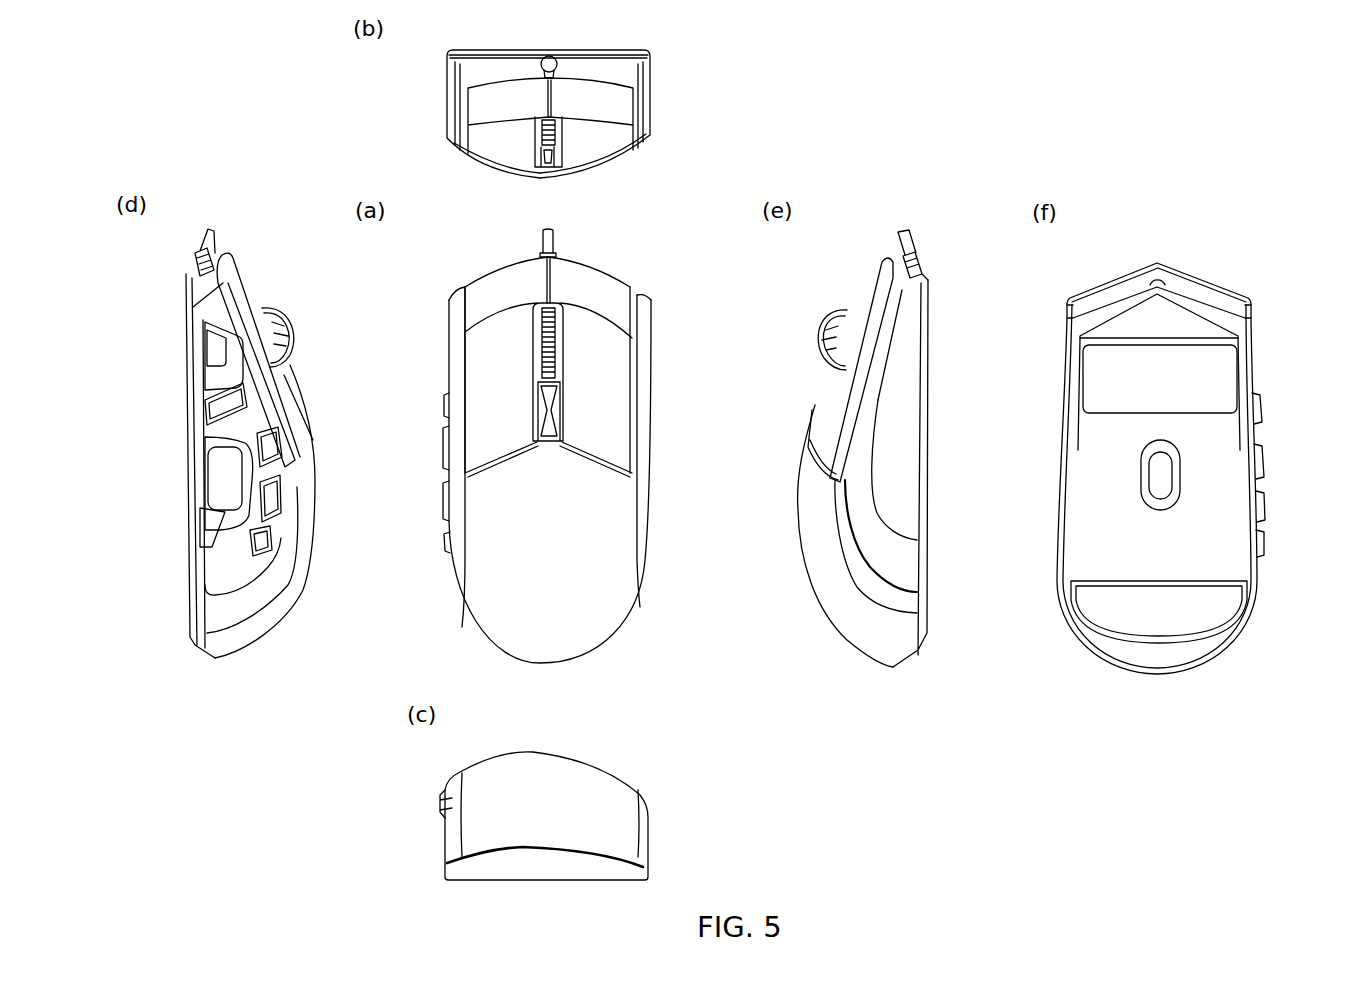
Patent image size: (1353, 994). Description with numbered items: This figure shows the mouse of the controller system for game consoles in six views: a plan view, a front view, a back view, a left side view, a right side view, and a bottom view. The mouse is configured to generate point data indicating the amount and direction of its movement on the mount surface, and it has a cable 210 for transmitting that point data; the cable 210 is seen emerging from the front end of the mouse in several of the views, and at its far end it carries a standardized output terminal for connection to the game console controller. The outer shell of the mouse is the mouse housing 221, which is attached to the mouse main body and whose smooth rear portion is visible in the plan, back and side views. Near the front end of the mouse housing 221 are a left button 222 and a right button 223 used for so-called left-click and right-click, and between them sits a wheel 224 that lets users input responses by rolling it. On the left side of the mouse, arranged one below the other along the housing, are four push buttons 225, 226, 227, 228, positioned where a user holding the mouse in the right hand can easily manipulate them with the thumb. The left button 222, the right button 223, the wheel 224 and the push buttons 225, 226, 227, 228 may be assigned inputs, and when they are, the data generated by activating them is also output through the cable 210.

The cable 210 is at (556, 242).
The mouse housing 221 is at (621, 556).
The left button 222 is at (473, 112).
The right button 223 is at (623, 103).
The wheel 224 is at (553, 143).
The push button 225 is at (448, 400).
The push button 226 is at (444, 455).
The push button 227 is at (444, 501).
The push button 228 is at (442, 543).